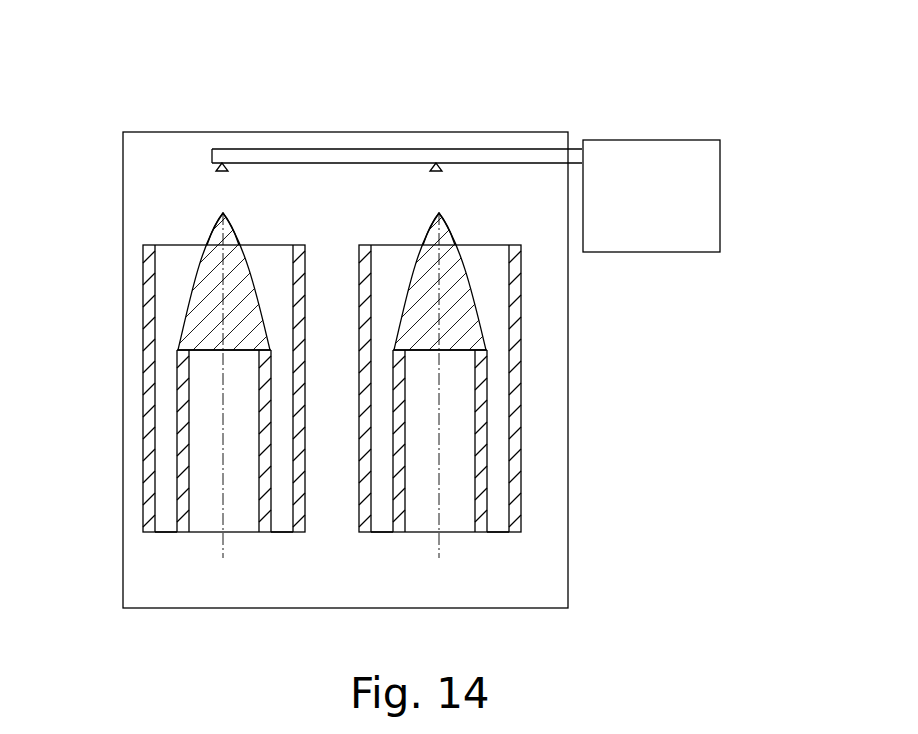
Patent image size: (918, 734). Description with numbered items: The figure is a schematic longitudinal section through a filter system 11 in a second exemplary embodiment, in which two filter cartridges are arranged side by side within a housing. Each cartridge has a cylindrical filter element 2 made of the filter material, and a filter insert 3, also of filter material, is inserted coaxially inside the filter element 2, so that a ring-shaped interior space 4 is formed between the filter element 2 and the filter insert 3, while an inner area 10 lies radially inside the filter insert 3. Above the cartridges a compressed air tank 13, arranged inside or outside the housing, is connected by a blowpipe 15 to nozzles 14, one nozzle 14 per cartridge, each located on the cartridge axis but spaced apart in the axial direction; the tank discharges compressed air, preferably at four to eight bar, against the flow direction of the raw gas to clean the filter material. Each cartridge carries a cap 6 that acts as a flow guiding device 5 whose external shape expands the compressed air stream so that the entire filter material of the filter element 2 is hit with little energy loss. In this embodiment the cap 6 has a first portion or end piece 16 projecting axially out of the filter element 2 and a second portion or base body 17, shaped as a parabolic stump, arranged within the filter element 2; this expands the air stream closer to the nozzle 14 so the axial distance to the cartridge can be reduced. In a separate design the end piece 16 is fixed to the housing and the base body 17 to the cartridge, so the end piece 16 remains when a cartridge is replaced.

The filter element 2 is at (143, 131).
The filter insert 3 is at (183, 448).
The interior space 4 is at (163, 498).
The flow guiding device 5 is at (335, 292).
The cap 6 is at (203, 298).
The inner area 10 is at (208, 513).
The filter system 11 is at (658, 82).
The compressed air tank 13 is at (705, 182).
The nozzle 14 is at (221, 158).
The blowpipe 15 is at (513, 157).
The end piece 16 is at (217, 226).
The base body 17 is at (217, 258).